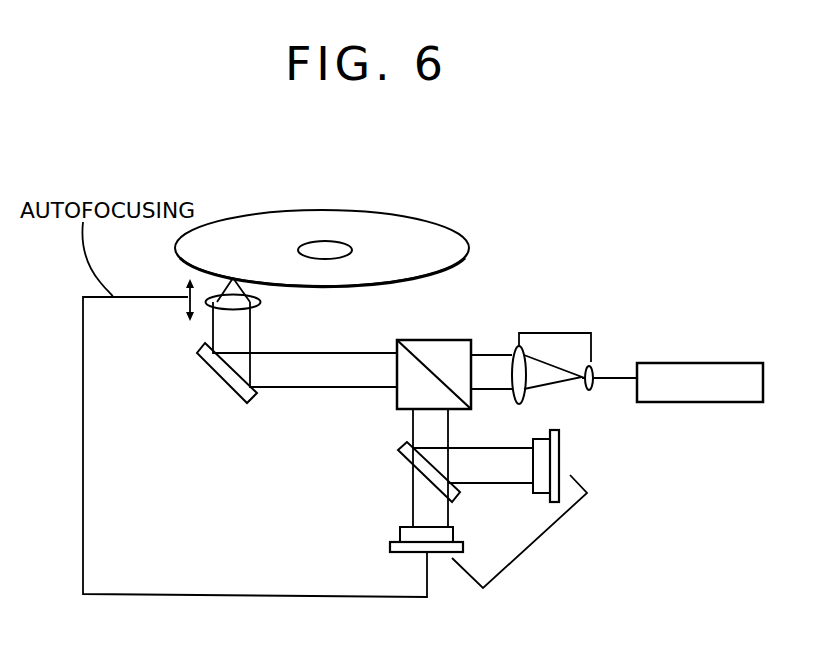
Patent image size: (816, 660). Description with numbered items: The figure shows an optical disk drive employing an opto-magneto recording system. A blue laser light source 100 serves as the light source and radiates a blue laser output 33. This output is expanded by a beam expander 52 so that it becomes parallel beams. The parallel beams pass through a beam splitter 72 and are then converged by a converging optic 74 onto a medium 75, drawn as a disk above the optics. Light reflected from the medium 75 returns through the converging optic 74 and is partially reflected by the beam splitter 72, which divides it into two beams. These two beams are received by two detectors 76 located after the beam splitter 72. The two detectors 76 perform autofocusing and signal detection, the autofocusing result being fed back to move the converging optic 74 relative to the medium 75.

The medium 75 is at (423, 233).
The converging optic 74 is at (208, 304).
The beam splitter 72 is at (457, 348).
The beam expander 52 is at (558, 333).
The blue laser output 33 is at (617, 377).
The blue laser light source 100 is at (702, 372).
The detectors 76 is at (522, 555).